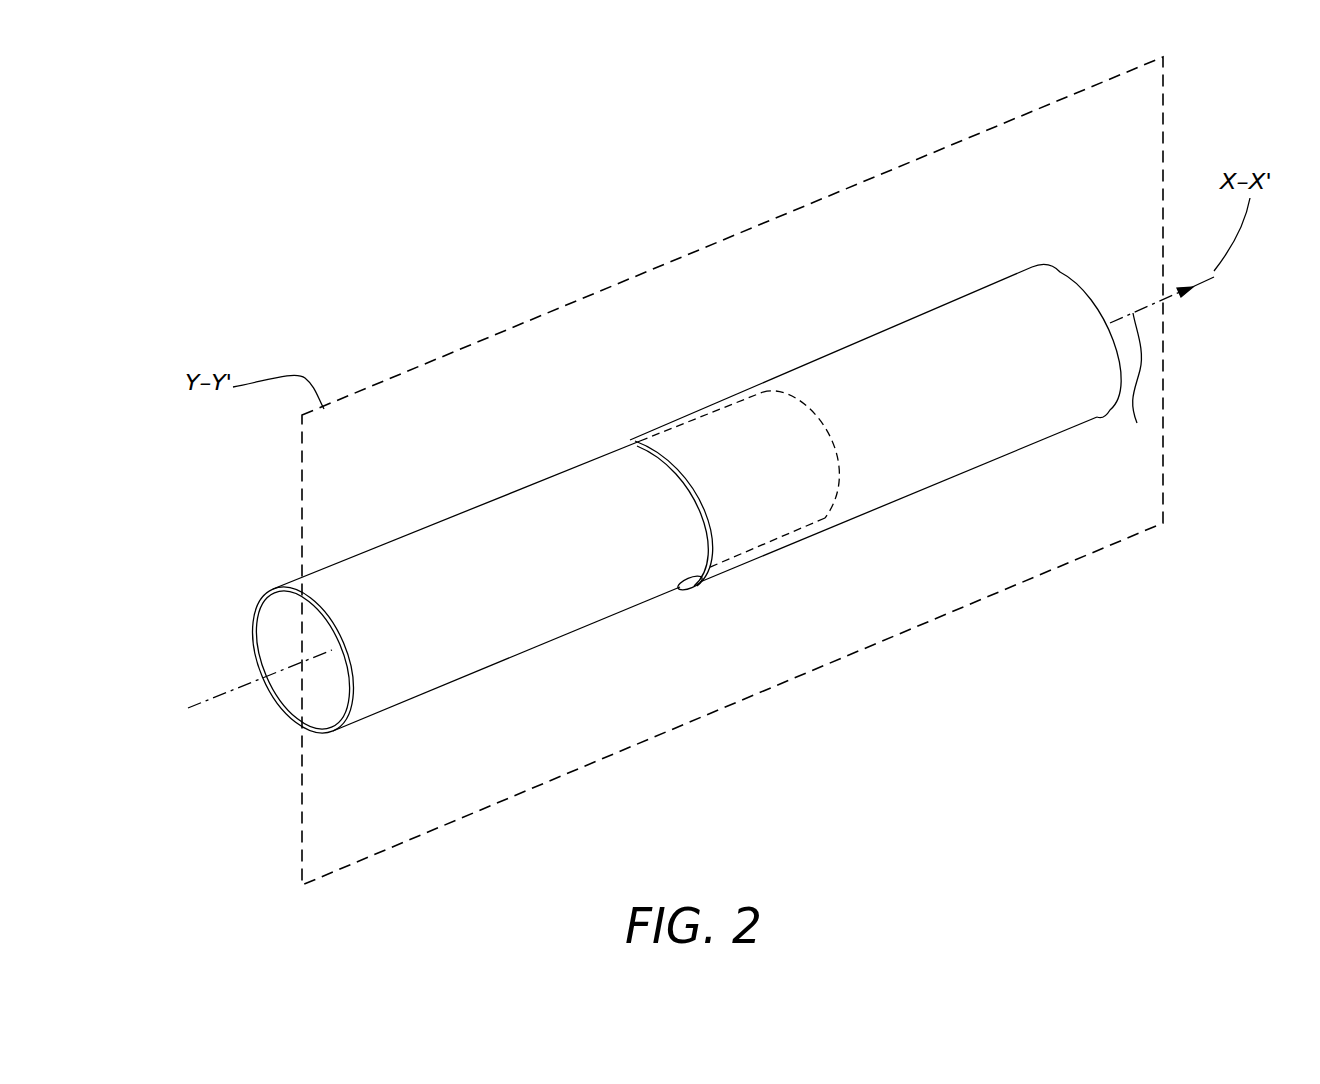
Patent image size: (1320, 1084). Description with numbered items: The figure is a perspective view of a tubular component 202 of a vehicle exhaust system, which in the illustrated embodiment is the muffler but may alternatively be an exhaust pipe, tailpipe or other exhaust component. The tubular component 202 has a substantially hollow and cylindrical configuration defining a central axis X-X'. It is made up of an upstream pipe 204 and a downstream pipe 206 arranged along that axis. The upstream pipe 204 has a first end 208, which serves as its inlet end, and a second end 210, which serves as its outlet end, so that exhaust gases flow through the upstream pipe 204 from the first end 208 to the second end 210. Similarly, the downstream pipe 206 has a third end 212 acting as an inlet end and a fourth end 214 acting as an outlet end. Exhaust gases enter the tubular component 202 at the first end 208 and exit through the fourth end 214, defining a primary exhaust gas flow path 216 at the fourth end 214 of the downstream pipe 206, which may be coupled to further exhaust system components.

The tubular component 202 is at (256, 578).
The upstream pipe 204 is at (448, 714).
The downstream pipe 206 is at (983, 484).
The first end 208 is at (276, 721).
The second end 210 is at (854, 472).
The third end 212 is at (610, 443).
The fourth end 214 is at (1094, 276).
The primary exhaust gas flow path 216 is at (1131, 380).